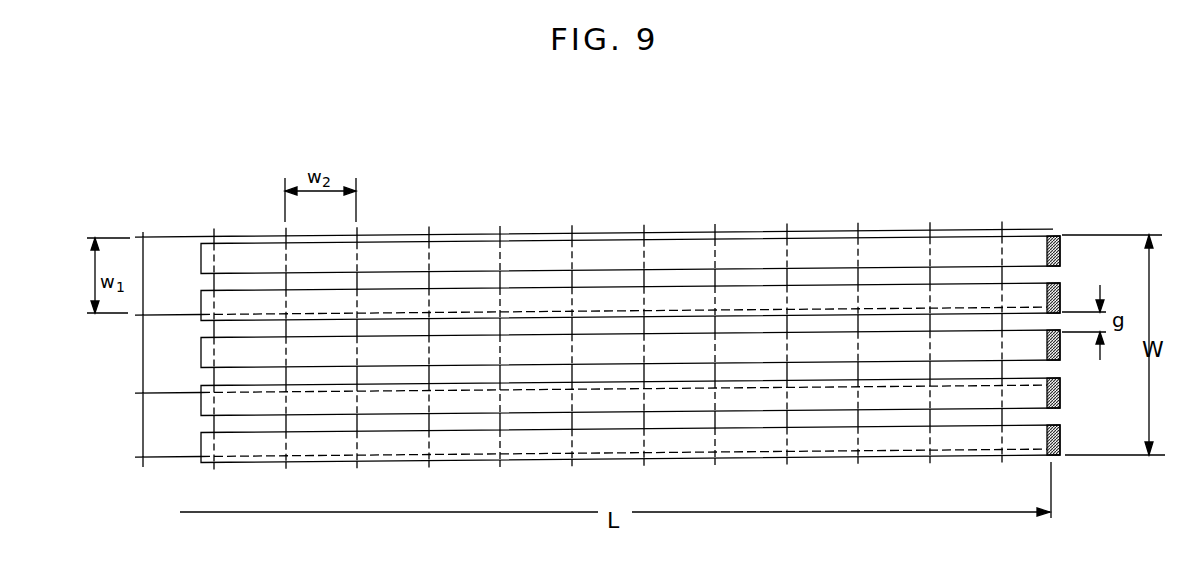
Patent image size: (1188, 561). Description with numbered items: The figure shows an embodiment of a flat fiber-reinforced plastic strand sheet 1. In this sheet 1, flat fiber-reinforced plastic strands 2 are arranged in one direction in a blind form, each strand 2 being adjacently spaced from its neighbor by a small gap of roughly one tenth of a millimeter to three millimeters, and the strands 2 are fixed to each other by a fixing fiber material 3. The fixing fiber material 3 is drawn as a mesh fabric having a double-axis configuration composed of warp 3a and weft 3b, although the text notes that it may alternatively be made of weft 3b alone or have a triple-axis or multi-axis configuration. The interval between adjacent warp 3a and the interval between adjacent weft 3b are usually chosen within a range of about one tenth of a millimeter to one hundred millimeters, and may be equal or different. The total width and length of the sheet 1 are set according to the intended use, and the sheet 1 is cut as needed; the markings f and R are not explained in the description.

The flat fiber-reinforced plastic strand sheet 1 is at (597, 289).
The flat fiber-reinforced plastic strand 2 is at (630, 349).
The fixing fiber material 3 is at (594, 345).
The warp 3a is at (594, 345).
The weft 3b is at (624, 349).
The fused end portion f is at (1053, 345).
The end region R is at (1061, 252).